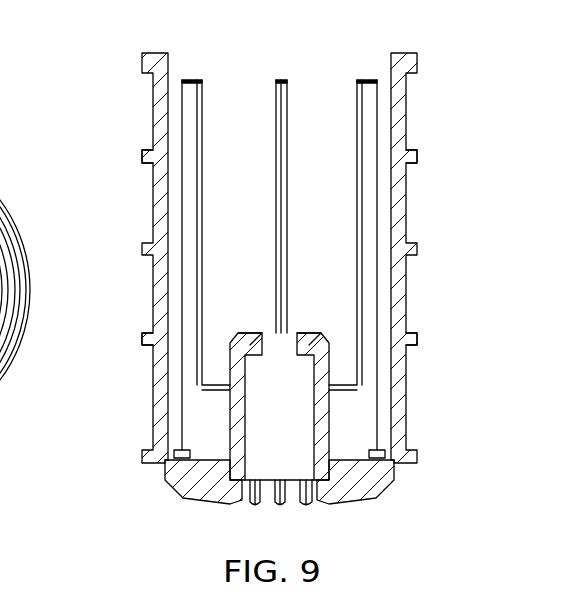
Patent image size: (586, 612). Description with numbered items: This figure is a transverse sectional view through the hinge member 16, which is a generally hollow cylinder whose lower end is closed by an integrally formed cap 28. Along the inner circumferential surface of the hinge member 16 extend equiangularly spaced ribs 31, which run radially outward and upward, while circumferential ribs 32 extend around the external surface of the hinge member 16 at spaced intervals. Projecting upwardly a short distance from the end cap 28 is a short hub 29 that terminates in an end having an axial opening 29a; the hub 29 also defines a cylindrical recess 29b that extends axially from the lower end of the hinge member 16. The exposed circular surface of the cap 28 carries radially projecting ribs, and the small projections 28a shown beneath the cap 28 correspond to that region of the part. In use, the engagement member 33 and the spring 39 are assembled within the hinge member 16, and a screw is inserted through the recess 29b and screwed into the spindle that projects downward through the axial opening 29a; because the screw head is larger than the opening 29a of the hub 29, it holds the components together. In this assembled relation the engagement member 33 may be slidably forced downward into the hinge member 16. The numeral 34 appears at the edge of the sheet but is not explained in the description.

The hinge member 16 is at (153, 115).
The circumferential ribs 32 is at (143, 157).
The ribs 31 is at (358, 150).
The hub 29 is at (323, 410).
The axial opening 29a is at (283, 348).
The cylindrical recess 29b is at (272, 427).
The cap 28 is at (383, 489).
The base legs 28a is at (281, 503).
The spring 39 is at (128, 608).
The engagement member 33 is at (533, 610).
The element 34 is at (388, 611).